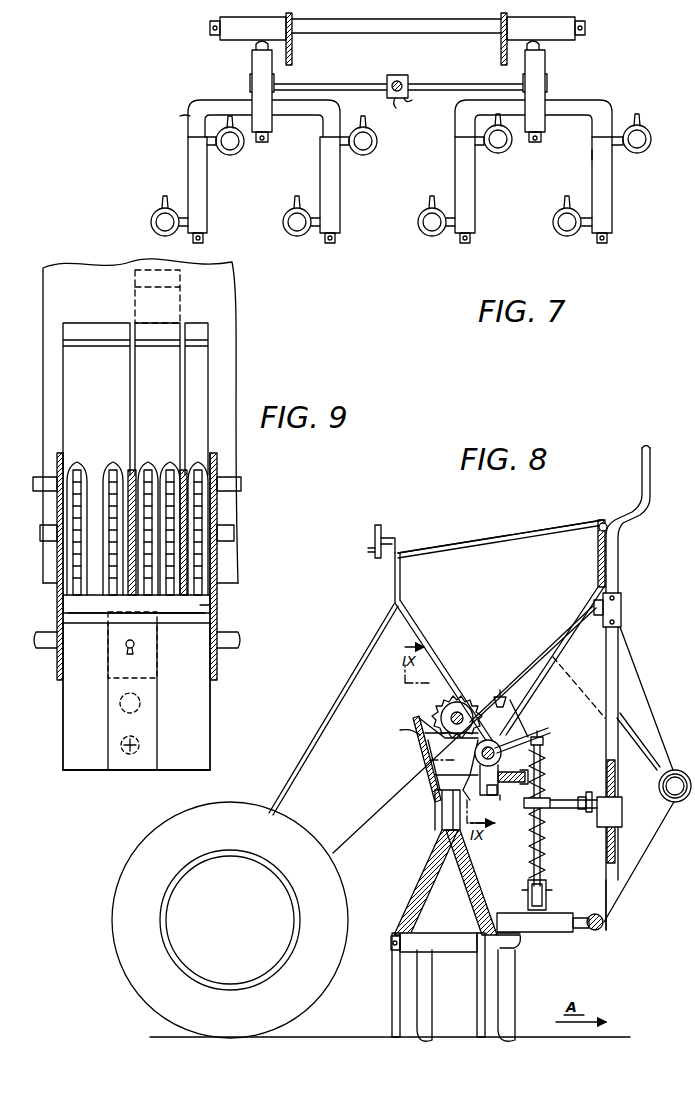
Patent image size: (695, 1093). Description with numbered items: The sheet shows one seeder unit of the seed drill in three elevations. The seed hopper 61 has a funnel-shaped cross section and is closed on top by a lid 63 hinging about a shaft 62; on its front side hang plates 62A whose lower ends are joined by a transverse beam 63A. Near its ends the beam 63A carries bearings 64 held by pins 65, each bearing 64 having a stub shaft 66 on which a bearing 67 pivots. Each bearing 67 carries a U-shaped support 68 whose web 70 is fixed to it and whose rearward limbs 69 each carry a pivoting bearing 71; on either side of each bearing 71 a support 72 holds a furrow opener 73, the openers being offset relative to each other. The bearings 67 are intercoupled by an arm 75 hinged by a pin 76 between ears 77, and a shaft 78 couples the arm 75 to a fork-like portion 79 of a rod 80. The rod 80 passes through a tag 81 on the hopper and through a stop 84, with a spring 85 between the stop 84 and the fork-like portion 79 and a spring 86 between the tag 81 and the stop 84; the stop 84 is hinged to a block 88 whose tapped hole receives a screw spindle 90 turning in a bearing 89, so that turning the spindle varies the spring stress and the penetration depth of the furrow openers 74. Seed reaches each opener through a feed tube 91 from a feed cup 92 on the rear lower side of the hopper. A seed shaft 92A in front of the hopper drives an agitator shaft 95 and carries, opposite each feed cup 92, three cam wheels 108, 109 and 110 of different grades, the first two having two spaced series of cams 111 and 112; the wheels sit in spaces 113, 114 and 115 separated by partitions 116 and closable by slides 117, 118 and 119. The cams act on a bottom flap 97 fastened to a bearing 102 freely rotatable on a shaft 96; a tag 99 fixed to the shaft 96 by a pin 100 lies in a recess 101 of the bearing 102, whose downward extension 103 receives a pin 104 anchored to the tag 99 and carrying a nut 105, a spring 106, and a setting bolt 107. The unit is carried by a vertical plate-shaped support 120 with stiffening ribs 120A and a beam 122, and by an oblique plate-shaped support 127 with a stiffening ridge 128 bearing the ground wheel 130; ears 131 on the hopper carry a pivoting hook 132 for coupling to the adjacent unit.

In FIG. 9, the seed hopper 61 is at (236, 360).
In FIG. 8, the seed hopper 61 is at (500, 548).
In FIG. 8, the shaft 62 is at (596, 532).
In FIG. 7, the plates 62A is at (292, 50).
In FIG. 8, the plates 62A is at (612, 888).
In FIG. 8, the lid 63 is at (580, 524).
In FIG. 7, the beam 63A is at (365, 34).
In FIG. 8, the beam 63A is at (604, 928).
In FIG. 7, the bearings 64 is at (220, 38).
In FIG. 7, the pins 65 is at (210, 28).
In FIG. 7, the stub shaft 66 is at (256, 46).
In FIG. 8, the stub shaft 66 is at (580, 932).
In FIG. 7, the bearing 67 is at (272, 126).
In FIG. 8, the bearing 67 is at (538, 934).
In FIG. 7, the support 68 is at (186, 116).
In FIG. 8, the support 68 is at (520, 950).
In FIG. 7, the limbs 69 is at (204, 238).
In FIG. 8, the limbs 69 is at (390, 942).
In FIG. 7, the web 70 is at (216, 104).
In FIG. 8, the web 70 is at (528, 906).
In FIG. 7, the bearing 71 is at (188, 166).
In FIG. 8, the bearing 71 is at (448, 934).
In FIG. 7, the support 72 is at (613, 163).
In FIG. 7, the furrow opener 73 is at (220, 152).
In FIG. 8, the furrow opener 73 is at (392, 1002).
In FIG. 7, the furrow openers 74 is at (506, 140).
In FIG. 8, the furrow openers 74 is at (432, 994).
In FIG. 7, the arm 75 is at (350, 86).
In FIG. 7, the pin 76 is at (258, 68).
In FIG. 7, the ears 77 is at (252, 86).
In FIG. 7, the shaft 78 is at (403, 110).
In FIG. 8, the shaft 78 is at (526, 896).
In FIG. 7, the fork-like portion 79 is at (414, 98).
In FIG. 8, the fork-like portion 79 is at (548, 896).
In FIG. 7, the rod 80 is at (404, 76).
In FIG. 8, the rod 80 is at (550, 868).
In FIG. 8, the tag 81 is at (546, 742).
In FIG. 8, the stop 84 is at (556, 812).
In FIG. 8, the spring 85 is at (536, 850).
In FIG. 8, the spring 86 is at (550, 772).
In FIG. 8, the block 88 is at (620, 804).
In FIG. 8, the bearing 89 is at (622, 606).
In FIG. 8, the screw spindle 90 is at (642, 464).
In FIG. 8, the feed tube 91 is at (416, 934).
In FIG. 9, the feed cup 92 is at (58, 680).
In FIG. 8, the feed cup 92 is at (420, 748).
In FIG. 9, the seed shaft 92A is at (234, 536).
In FIG. 8, the seed shaft 92A is at (444, 712).
In FIG. 9, the agitator shaft 95 is at (241, 484).
In FIG. 8, the agitator shaft 95 is at (502, 696).
In FIG. 9, the shaft 96 is at (241, 646).
In FIG. 8, the shaft 96 is at (540, 744).
In FIG. 8, the bottom flap 97 is at (396, 726).
In FIG. 9, the tag 99 is at (120, 770).
In FIG. 9, the pin 100 is at (132, 645).
In FIG. 9, the recess 101 is at (104, 672).
In FIG. 8, the bearing 102 is at (516, 730).
In FIG. 9, the extension 103 is at (212, 748).
In FIG. 8, the extension 103 is at (470, 796).
In FIG. 9, the pin 104 is at (140, 704).
In FIG. 8, the nut 105 is at (550, 780).
In FIG. 8, the spring 106 is at (504, 748).
In FIG. 9, the setting bolt 107 is at (121, 745).
In FIG. 8, the setting bolt 107 is at (504, 800).
In FIG. 9, the cam wheel 108 is at (76, 464).
In FIG. 9, the cam wheel 109 is at (146, 464).
In FIG. 9, the cam wheel 110 is at (198, 464).
In FIG. 9, the cams 111 is at (94, 468).
In FIG. 9, the cams 112 is at (160, 468).
In FIG. 9, the space 113 is at (70, 604).
In FIG. 9, the space 114 is at (164, 616).
In FIG. 9, the space 115 is at (216, 598).
In FIG. 9, the partitions 116 is at (216, 612).
In FIG. 9, the slide 117 is at (68, 326).
In FIG. 9, the slide 118 is at (146, 320).
In FIG. 9, the slide 119 is at (202, 322).
In FIG. 8, the plate-shaped support 120 is at (648, 674).
In FIG. 8, the stiffening ribs 120A is at (622, 728).
In FIG. 8, the beam 122 is at (670, 800).
In FIG. 8, the plate-shaped support 127 is at (338, 844).
In FIG. 8, the stiffening ridge 128 is at (322, 772).
In FIG. 8, the ground wheel 130 is at (160, 1004).
In FIG. 8, the ears 131 is at (375, 542).
In FIG. 8, the hook 132 is at (382, 530).